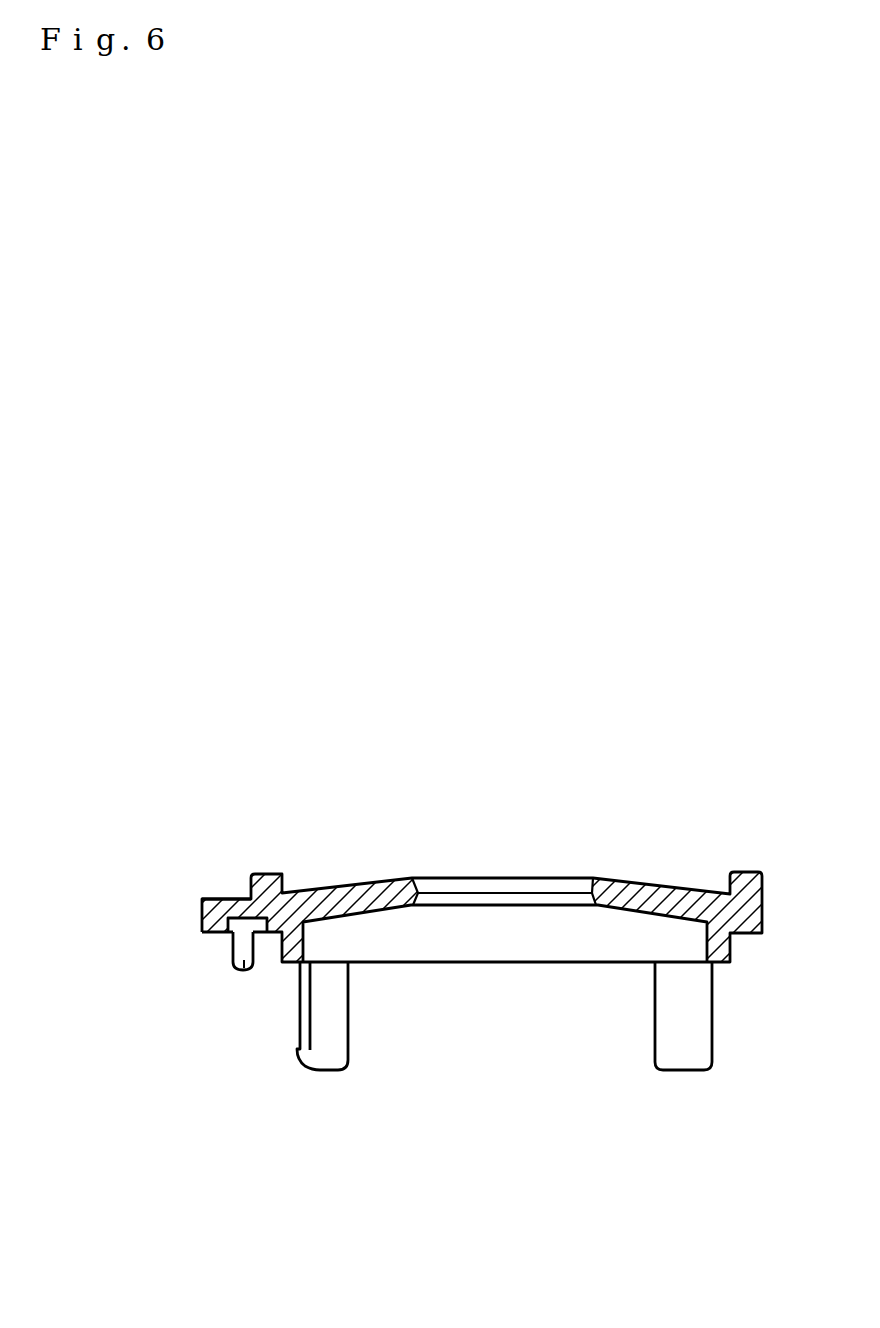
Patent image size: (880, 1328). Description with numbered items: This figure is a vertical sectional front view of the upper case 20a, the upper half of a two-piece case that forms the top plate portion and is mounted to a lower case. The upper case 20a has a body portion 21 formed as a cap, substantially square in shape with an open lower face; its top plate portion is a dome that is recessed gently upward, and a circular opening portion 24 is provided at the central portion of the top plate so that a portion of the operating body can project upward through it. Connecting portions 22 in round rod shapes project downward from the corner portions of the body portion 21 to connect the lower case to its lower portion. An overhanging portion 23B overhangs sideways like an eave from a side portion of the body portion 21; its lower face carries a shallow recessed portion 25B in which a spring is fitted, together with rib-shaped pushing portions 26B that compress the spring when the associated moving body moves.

The upper case 20a is at (782, 892).
The body portion 21 is at (673, 885).
The connecting portions 22 is at (323, 1073).
The overhanging portion 23B is at (227, 897).
The circular opening portion 24 is at (517, 880).
The shallow recessed portion 25B is at (225, 933).
The pushing portions 26B is at (245, 972).